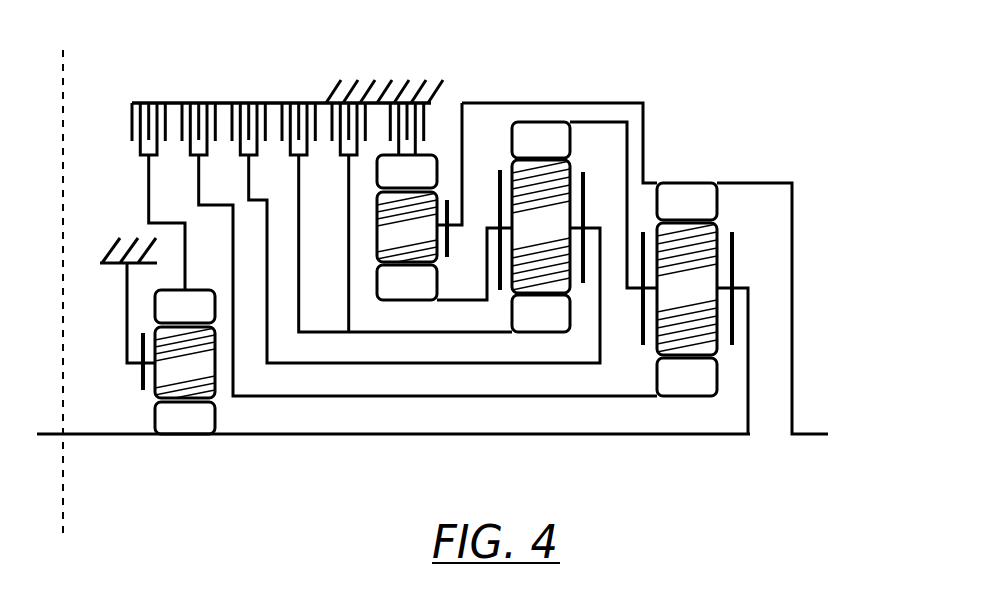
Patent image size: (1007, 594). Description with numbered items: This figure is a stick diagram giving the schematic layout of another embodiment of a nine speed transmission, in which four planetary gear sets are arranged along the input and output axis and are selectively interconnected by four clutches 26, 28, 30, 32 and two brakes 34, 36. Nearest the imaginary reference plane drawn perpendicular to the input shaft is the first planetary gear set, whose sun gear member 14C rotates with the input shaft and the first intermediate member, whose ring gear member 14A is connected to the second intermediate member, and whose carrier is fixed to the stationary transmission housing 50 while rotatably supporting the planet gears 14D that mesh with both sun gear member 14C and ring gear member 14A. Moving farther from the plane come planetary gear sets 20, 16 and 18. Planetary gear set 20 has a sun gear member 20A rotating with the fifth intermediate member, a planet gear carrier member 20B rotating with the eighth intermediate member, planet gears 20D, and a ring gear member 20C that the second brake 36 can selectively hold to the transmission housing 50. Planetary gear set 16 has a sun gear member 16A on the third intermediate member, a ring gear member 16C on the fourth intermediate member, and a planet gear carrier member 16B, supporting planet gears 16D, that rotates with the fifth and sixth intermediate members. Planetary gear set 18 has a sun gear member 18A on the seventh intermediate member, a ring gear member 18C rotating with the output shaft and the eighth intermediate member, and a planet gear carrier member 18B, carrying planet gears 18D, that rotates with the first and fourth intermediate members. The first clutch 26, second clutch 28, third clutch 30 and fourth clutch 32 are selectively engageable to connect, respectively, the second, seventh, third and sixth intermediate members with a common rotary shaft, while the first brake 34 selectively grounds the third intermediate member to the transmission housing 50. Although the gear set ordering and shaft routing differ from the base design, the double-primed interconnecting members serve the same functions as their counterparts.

The ring gear member 14A is at (167, 319).
The sun gear member 14C is at (167, 430).
The planet gears 14D is at (167, 375).
The planetary gear set 16 is at (543, 185).
The sun gear member 16A is at (523, 326).
The planet gear carrier member 16B is at (501, 170).
The ring gear member 16C is at (523, 153).
The planet gears 16D is at (523, 237).
The planetary gear set 18 is at (669, 274).
The sun gear member 18A is at (669, 390).
The planet gear carrier member 18B is at (734, 276).
The ring gear member 18C is at (669, 215).
The planet gears 18D is at (669, 300).
The planetary gear set 20 is at (426, 217).
The sun gear member 20A is at (389, 294).
The planet gear carrier member 20B is at (447, 257).
The ring gear member 20C is at (389, 184).
The planet gears 20D is at (389, 240).
The first clutch 26 is at (133, 120).
The second clutch 28 is at (190, 143).
The third clutch 30 is at (289, 147).
The fourth clutch 32 is at (240, 145).
The first brake 34 is at (334, 150).
The second brake 36 is at (416, 118).
The transmission housing 50 is at (327, 100).